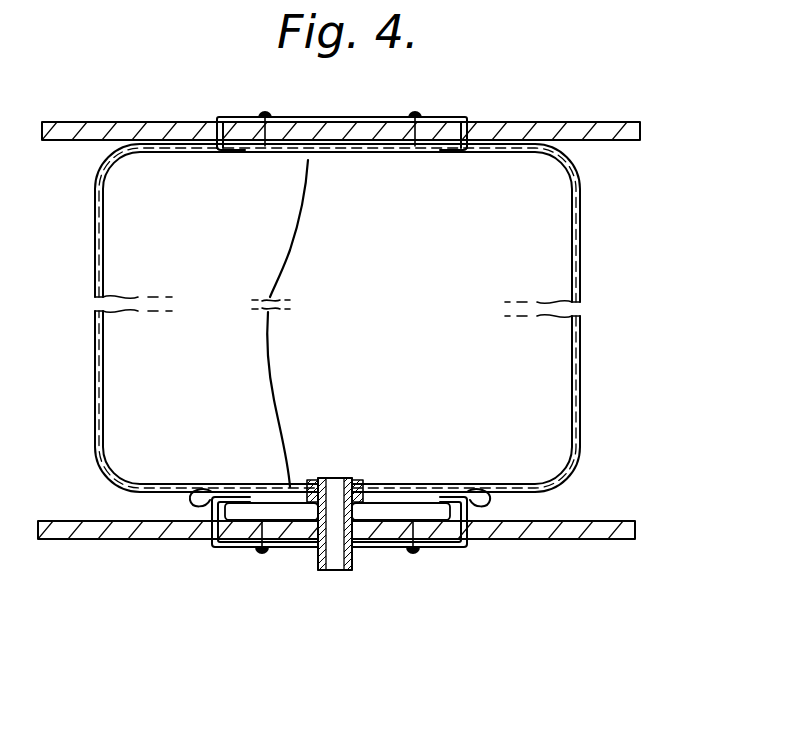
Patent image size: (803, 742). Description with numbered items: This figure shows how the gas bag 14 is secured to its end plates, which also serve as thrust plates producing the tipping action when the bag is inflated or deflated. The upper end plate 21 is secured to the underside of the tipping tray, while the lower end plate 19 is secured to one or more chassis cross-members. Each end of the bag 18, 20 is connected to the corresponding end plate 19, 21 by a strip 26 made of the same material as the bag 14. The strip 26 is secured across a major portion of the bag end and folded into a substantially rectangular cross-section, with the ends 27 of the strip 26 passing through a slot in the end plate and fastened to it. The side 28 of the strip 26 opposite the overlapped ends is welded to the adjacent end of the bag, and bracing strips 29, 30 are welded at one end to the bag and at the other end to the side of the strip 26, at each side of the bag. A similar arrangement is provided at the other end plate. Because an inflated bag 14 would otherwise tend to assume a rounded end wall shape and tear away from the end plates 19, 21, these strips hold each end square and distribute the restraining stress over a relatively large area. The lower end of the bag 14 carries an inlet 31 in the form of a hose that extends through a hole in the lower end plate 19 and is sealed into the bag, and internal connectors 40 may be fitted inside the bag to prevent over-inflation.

The gas bag 14 is at (600, 300).
The end of the bag 18 is at (100, 466).
The lower end plate 19 is at (58, 528).
The end of the bag 20 is at (186, 122).
The upper end plate 21 is at (562, 122).
The strip 26 is at (440, 548).
The ends of strip 27 is at (278, 117).
The side of strip 28 is at (415, 497).
The bracing strip 29 is at (185, 495).
The bracing strip 30 is at (503, 492).
The inlet 31 is at (318, 562).
The internal connectors 40 is at (282, 266).